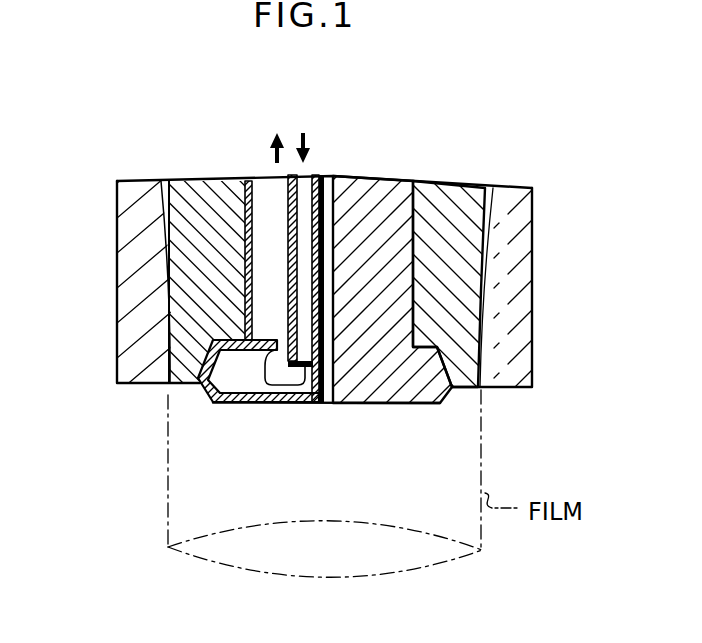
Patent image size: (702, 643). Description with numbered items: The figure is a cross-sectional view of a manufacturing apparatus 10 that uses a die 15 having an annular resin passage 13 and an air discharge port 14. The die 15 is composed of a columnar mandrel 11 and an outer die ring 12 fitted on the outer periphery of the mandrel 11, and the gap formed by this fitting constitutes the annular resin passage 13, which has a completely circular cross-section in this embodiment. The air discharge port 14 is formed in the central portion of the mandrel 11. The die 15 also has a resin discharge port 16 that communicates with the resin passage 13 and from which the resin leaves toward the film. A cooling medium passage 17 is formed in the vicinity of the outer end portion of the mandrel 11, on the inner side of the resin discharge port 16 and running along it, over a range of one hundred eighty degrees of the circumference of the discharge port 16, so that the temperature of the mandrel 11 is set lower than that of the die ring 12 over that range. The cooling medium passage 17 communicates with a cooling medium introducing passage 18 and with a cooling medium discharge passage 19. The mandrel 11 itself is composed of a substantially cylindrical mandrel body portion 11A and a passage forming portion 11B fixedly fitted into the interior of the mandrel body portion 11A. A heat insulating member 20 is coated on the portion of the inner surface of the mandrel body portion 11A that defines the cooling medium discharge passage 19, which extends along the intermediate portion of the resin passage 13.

The manufacturing apparatus 10 is at (510, 160).
The mandrel 11 is at (189, 170).
The mandrel body portion 11A is at (190, 325).
The passage forming portion 11B is at (293, 403).
The outer die ring 12 is at (114, 318).
The annular resin passage 13 is at (160, 181).
The air discharge port 14 is at (332, 407).
The die 15 is at (114, 243).
The resin discharge port 16 is at (168, 383).
The cooling medium passage 17 is at (235, 382).
The cooling medium introducing passage 18 is at (310, 172).
The cooling medium discharge passage 19 is at (287, 173).
The heat insulating member 20 is at (257, 185).